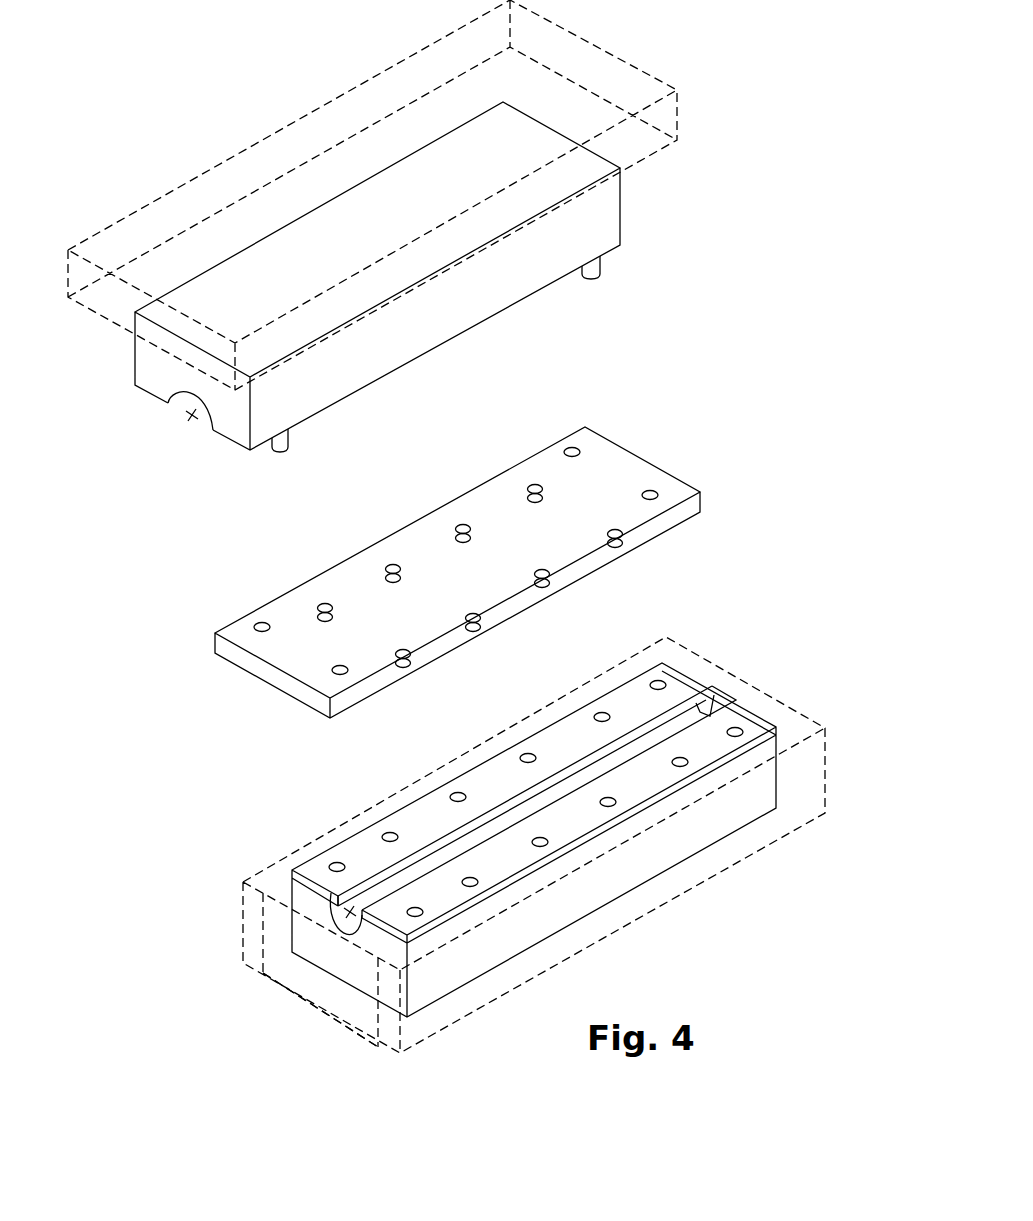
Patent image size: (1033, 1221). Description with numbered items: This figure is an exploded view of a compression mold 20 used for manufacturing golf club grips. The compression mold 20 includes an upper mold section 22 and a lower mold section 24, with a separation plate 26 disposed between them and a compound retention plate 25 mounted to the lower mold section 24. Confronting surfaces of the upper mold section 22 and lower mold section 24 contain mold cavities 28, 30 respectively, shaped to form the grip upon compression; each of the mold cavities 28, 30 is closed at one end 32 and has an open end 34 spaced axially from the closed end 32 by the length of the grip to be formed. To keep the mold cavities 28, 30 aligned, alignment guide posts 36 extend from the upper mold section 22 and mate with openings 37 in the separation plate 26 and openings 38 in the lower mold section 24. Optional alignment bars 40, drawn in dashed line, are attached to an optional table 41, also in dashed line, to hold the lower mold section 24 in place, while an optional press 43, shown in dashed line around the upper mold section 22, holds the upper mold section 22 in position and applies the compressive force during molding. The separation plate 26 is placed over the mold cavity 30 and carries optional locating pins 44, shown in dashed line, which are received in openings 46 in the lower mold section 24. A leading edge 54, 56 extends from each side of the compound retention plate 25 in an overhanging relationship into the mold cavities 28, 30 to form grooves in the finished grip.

The compression mold 20 is at (768, 322).
The upper mold section 22 is at (620, 210).
The lower mold section 24 is at (608, 903).
The compound retention plate 25 is at (480, 764).
The separation plate 26 is at (625, 445).
The mold cavity 28 is at (208, 418).
The mold cavity 30 is at (520, 820).
The closed end 32 is at (703, 707).
The open end 34 is at (190, 416).
The alignment guide posts 36 is at (288, 443).
The mating openings 37 is at (574, 450).
The openings 38 is at (660, 680).
The alignment bars 40 is at (280, 862).
The table 41 is at (332, 1003).
The press 43 is at (603, 52).
The locating pins 44 is at (528, 488).
The openings 46 is at (600, 716).
The leading edge 54 is at (332, 902).
The leading edge 56 is at (350, 922).